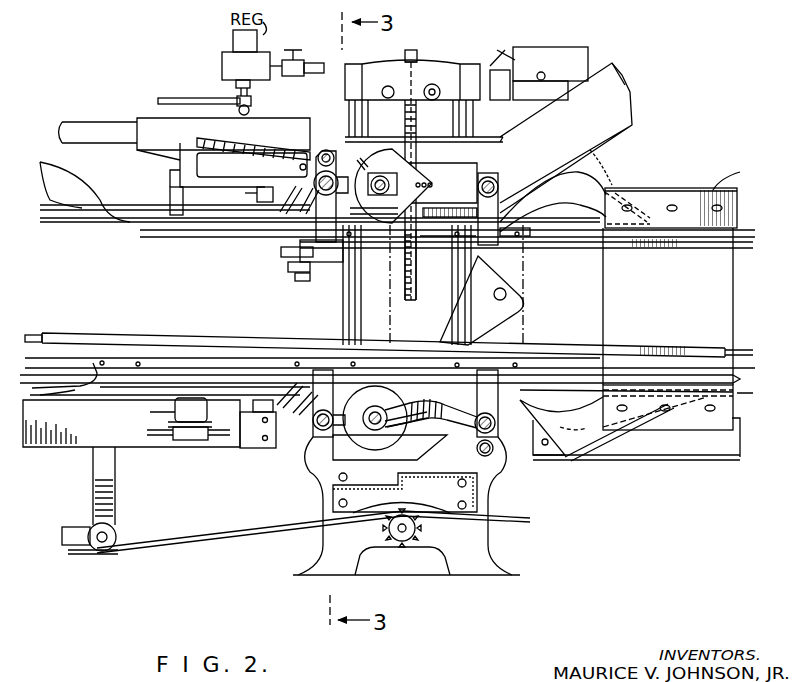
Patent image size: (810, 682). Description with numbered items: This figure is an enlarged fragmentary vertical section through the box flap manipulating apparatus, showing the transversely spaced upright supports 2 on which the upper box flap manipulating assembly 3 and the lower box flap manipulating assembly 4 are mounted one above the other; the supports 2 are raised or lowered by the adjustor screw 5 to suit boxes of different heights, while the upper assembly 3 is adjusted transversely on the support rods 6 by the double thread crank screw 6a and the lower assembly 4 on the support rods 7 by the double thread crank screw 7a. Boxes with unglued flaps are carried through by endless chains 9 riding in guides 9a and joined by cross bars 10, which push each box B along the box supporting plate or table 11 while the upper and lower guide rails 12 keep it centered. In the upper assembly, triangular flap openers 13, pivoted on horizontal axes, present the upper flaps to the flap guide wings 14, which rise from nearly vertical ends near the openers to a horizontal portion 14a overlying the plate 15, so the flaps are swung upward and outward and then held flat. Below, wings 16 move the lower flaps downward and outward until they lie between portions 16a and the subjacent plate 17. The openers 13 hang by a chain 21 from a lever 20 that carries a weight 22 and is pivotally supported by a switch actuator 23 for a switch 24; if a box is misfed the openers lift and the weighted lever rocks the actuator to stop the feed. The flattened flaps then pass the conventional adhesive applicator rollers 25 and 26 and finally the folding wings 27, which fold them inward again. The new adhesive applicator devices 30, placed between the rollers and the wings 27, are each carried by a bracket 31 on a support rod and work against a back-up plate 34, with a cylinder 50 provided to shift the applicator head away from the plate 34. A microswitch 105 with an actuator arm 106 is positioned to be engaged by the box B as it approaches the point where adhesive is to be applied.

The upright support 2 is at (445, 78).
The upper box flap manipulating assembly 3 is at (628, 180).
The lower box flap manipulating assembly 4 is at (560, 474).
The adjustor screw 5 is at (418, 118).
The support rod 6 is at (326, 195).
The double thread crank screw 6a is at (326, 149).
The support rod 7 is at (498, 424).
The double thread crank screw 7a is at (497, 465).
The chain 9 is at (35, 335).
The guide 9a is at (712, 350).
The cross bar 10 is at (740, 352).
The box supporting plate or table 11 is at (742, 393).
The guide rail 12 is at (745, 244).
The flap opener 13 is at (614, 187).
The flap guide wing 14 is at (560, 203).
The horizontal portion of flap guide wing 14a is at (420, 238).
The plate 15 is at (397, 278).
The wing 16 is at (585, 418).
The portion of wing 16a is at (407, 380).
The subjacent plate 17 is at (430, 386).
The lever 20 is at (583, 67).
The chain 21 is at (598, 160).
The weight 22 is at (488, 70).
The switch actuator 23 is at (575, 77).
The switch 24 is at (543, 77).
The adhesive applicator roller 25 is at (385, 157).
The adhesive applying roller 26 is at (368, 426).
The folding wing 27 is at (70, 190).
The adhesive applicator device 30 is at (275, 224).
The bracket 31 is at (340, 238).
The back-up plate 34 is at (238, 233).
The cylinder 50 is at (263, 190).
The microswitch 105 is at (332, 252).
The actuator arm 106 is at (292, 274).
The box B is at (740, 222).